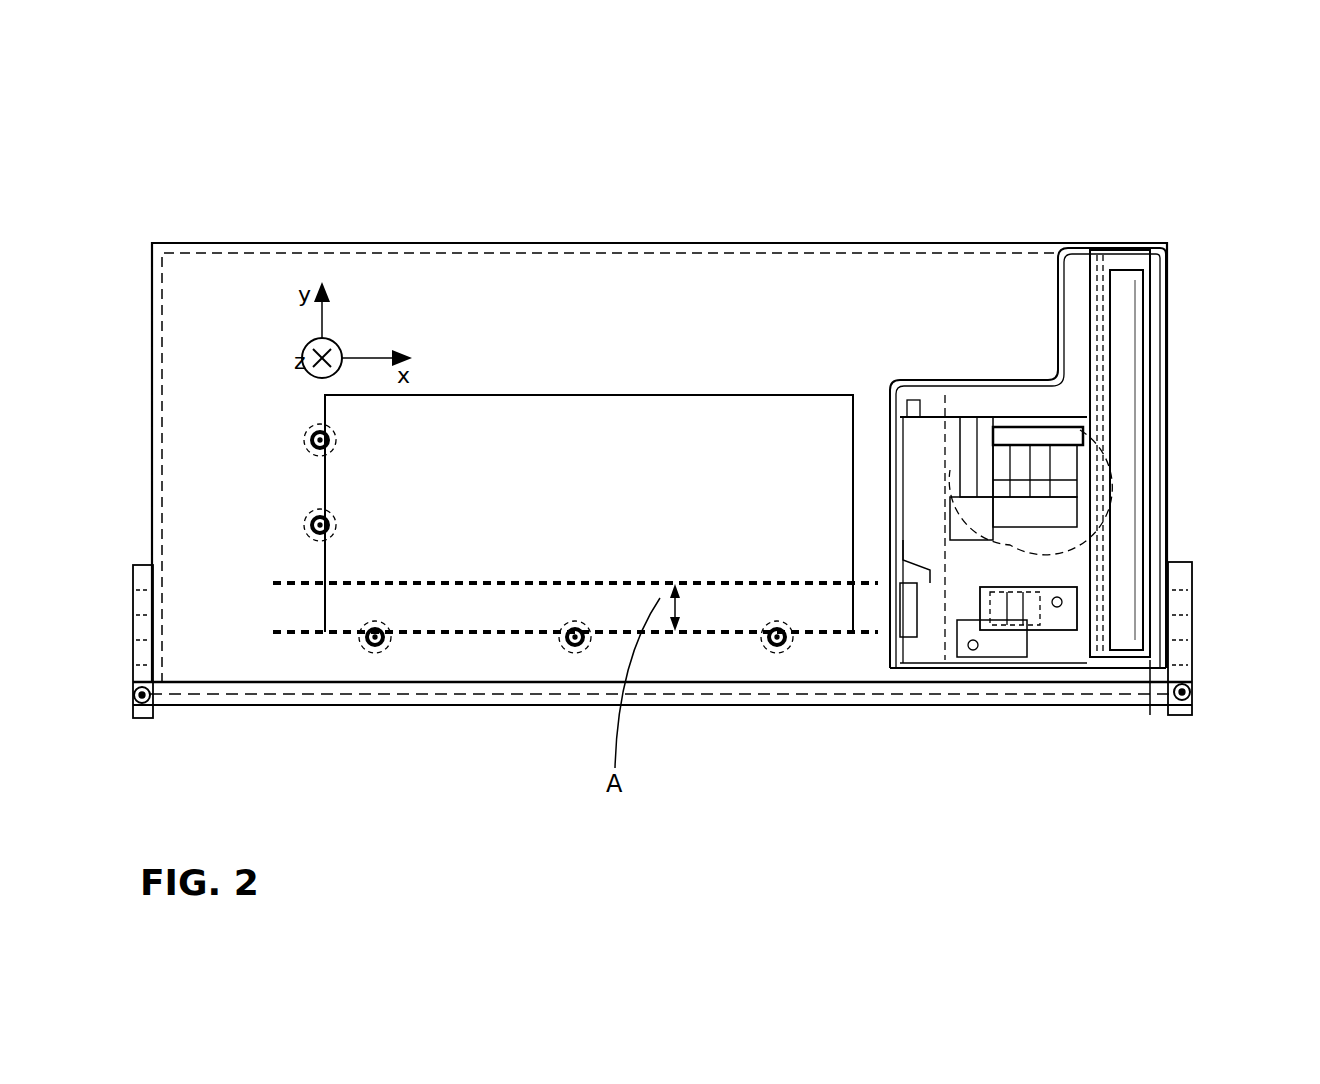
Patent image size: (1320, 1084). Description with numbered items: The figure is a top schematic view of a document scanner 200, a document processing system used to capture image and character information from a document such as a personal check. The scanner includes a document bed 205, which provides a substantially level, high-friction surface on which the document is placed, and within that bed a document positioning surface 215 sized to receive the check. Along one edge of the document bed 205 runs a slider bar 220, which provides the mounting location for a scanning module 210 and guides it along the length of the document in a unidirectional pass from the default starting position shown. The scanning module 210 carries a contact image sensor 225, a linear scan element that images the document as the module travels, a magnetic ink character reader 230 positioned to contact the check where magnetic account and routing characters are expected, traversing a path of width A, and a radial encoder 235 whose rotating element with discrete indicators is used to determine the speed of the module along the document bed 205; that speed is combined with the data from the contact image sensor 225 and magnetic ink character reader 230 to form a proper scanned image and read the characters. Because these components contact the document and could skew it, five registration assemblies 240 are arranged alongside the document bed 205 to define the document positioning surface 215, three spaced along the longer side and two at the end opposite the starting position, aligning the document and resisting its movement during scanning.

The document scanner 200 is at (708, 161).
The document bed 205 is at (520, 277).
The scanning module 210 is at (1192, 312).
The document positioning surface 215 is at (513, 408).
The slider bar 220 is at (1083, 690).
The contact image sensor (CIS) 225 is at (1125, 497).
The magnetic ink character reader (MICR) 230 is at (1003, 620).
The radial encoder 235 is at (1030, 425).
The registration assemblies 240 is at (322, 522).